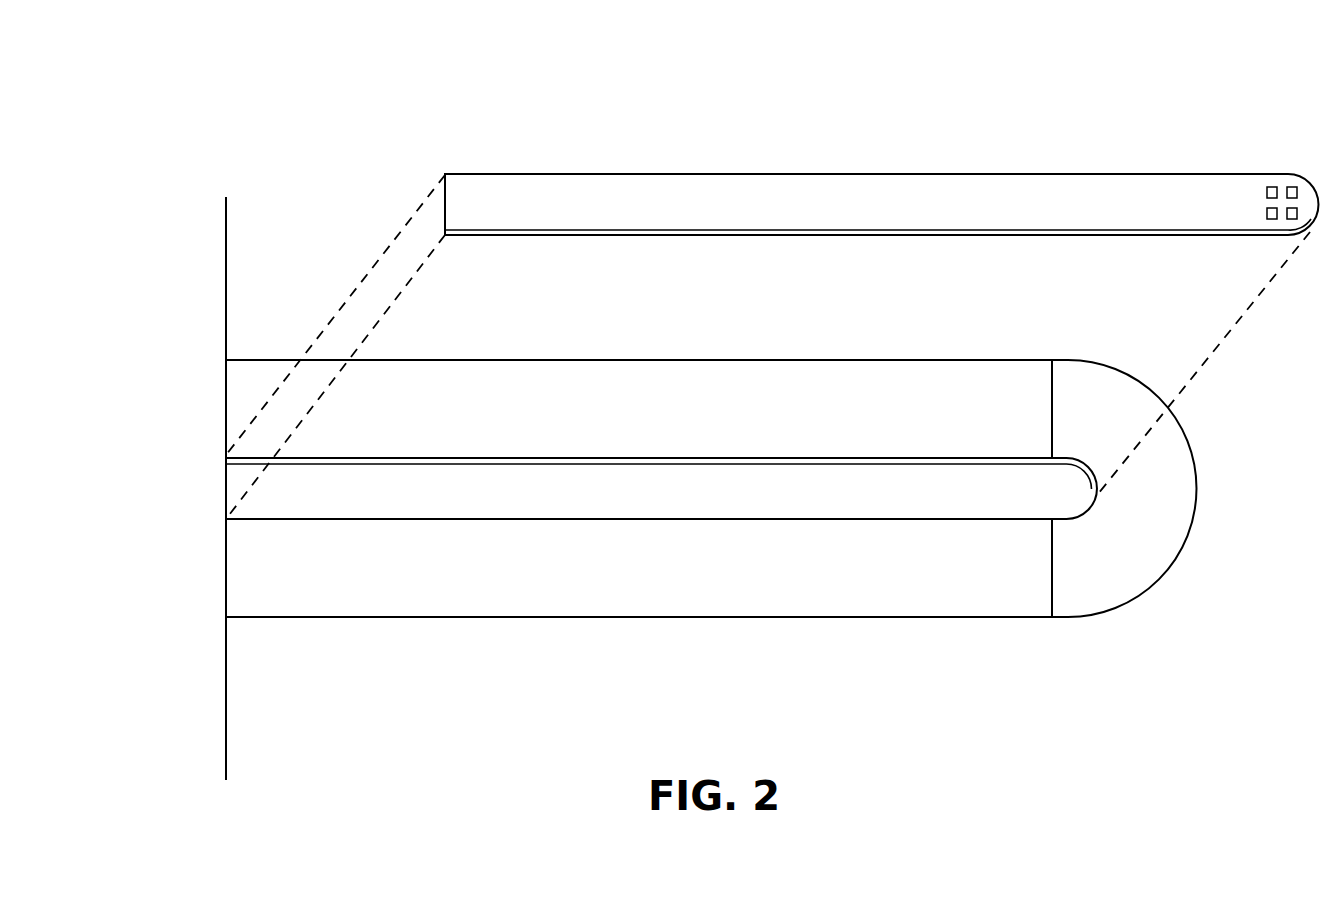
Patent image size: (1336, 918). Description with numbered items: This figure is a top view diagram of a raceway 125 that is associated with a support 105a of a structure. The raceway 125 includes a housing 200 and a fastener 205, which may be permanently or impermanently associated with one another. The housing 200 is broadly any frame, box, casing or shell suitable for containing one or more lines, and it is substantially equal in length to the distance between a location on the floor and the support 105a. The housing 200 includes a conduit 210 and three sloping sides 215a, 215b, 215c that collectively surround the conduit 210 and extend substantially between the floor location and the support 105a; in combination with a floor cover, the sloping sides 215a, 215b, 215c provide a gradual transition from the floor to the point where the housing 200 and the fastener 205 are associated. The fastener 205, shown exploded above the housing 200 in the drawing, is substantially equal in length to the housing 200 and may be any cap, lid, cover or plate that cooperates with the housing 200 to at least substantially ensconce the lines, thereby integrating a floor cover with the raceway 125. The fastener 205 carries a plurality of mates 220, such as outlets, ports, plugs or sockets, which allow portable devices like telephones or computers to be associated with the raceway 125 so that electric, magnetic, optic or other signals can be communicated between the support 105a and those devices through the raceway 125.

The support 105a is at (226, 310).
The raceway 125 is at (1065, 101).
The fastener 205 is at (880, 219).
The mates 220 is at (1290, 187).
The housing 200 is at (711, 538).
The conduit 210 is at (655, 505).
The sloping side 215a is at (665, 587).
The sloping side 215b is at (1157, 559).
The sloping side 215c is at (665, 424).